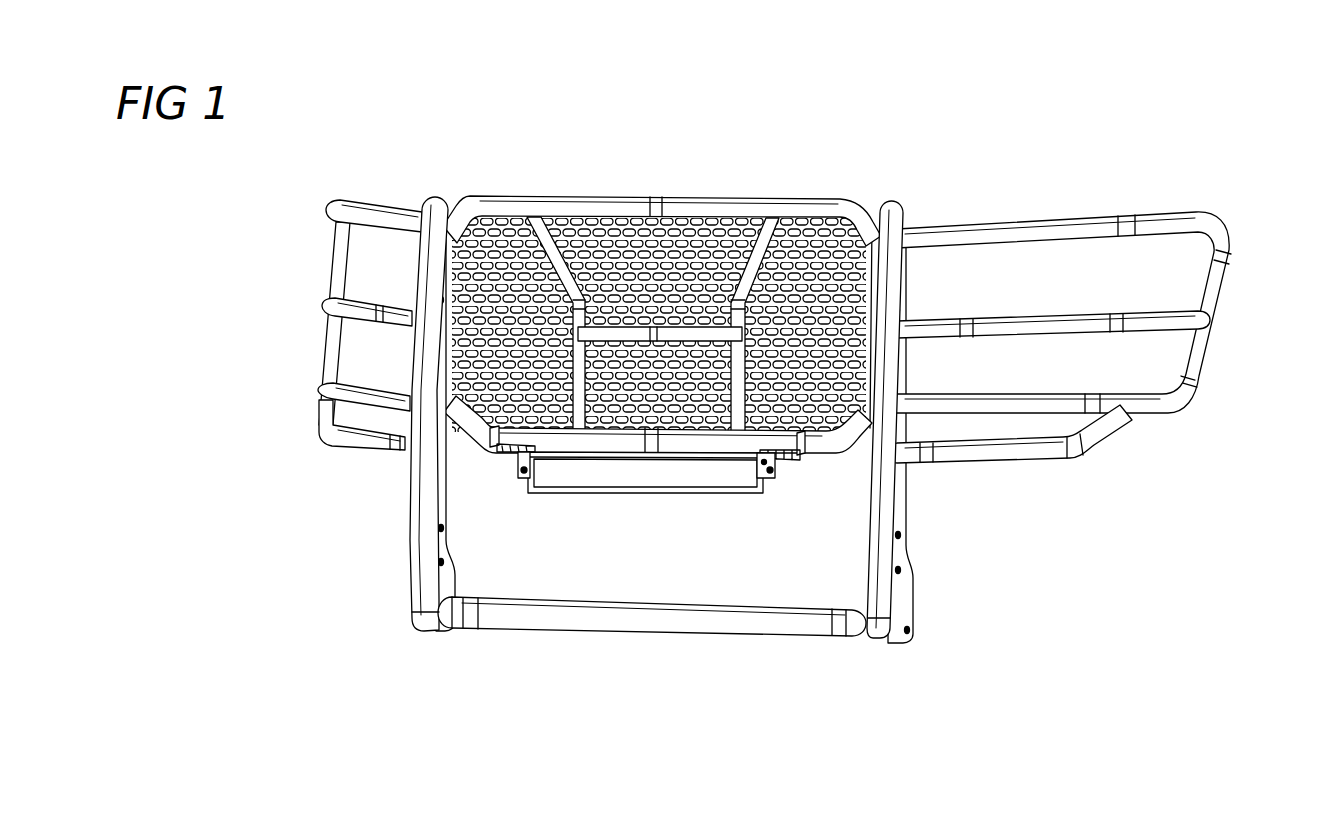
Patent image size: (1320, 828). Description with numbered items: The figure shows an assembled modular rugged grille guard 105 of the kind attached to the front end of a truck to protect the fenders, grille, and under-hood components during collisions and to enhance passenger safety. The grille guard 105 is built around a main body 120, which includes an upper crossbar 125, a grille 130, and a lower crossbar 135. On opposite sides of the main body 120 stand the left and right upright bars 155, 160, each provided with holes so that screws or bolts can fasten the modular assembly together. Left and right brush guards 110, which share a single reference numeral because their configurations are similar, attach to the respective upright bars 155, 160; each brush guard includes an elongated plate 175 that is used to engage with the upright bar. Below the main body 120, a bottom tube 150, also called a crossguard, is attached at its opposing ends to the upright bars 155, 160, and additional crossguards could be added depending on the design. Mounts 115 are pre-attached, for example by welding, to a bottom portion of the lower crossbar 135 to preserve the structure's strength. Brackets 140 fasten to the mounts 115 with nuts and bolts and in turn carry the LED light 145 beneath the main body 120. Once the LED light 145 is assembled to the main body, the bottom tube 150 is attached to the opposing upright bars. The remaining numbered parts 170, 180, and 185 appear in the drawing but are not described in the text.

The modular rugged grille guard 105 is at (1184, 74).
The brush guard 110 is at (334, 255).
The mount 115 is at (495, 453).
The main body 120 is at (672, 168).
The upper crossbar 125 is at (562, 195).
The grille 130 is at (717, 233).
The lower crossbar 135 is at (842, 455).
The bracket 140 is at (520, 468).
The LED light 145 is at (668, 494).
The bottom tube 150 is at (673, 632).
The left upright bar 155 is at (430, 632).
The right upright bar 160 is at (902, 641).
The left upright 170 is at (440, 262).
The elongated plate 175 is at (899, 268).
The left mounting bracket 180 is at (443, 548).
The right mounting bracket 185 is at (904, 597).